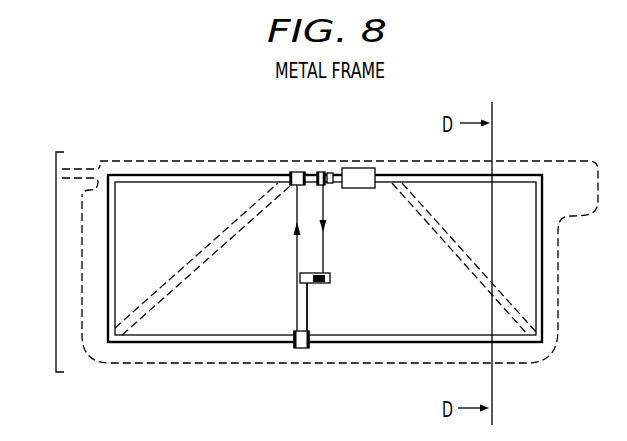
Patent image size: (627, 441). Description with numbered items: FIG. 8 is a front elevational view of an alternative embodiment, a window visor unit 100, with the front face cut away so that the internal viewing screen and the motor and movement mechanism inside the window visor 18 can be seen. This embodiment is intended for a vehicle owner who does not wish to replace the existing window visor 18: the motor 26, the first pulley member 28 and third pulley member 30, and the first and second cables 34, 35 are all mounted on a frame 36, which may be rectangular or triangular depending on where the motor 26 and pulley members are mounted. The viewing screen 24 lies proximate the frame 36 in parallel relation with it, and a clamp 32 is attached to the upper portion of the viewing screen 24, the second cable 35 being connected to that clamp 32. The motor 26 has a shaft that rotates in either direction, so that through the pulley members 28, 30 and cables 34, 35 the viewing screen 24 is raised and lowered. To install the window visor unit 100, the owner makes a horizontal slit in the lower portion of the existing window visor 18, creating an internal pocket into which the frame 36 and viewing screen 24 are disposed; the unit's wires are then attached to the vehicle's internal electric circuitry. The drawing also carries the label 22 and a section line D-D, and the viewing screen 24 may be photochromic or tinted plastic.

The window visor unit 100 is at (44, 257).
The flange 22 is at (80, 167).
The window visor 18 is at (553, 162).
The viewing screen 24 is at (518, 227).
The frame 36 is at (543, 283).
The motor 26 is at (360, 167).
The first pulley member 28 is at (330, 170).
The third pulley member 30 is at (293, 343).
The clamp 32 is at (331, 278).
The first cable 34 is at (326, 248).
The second cable 35 is at (296, 249).